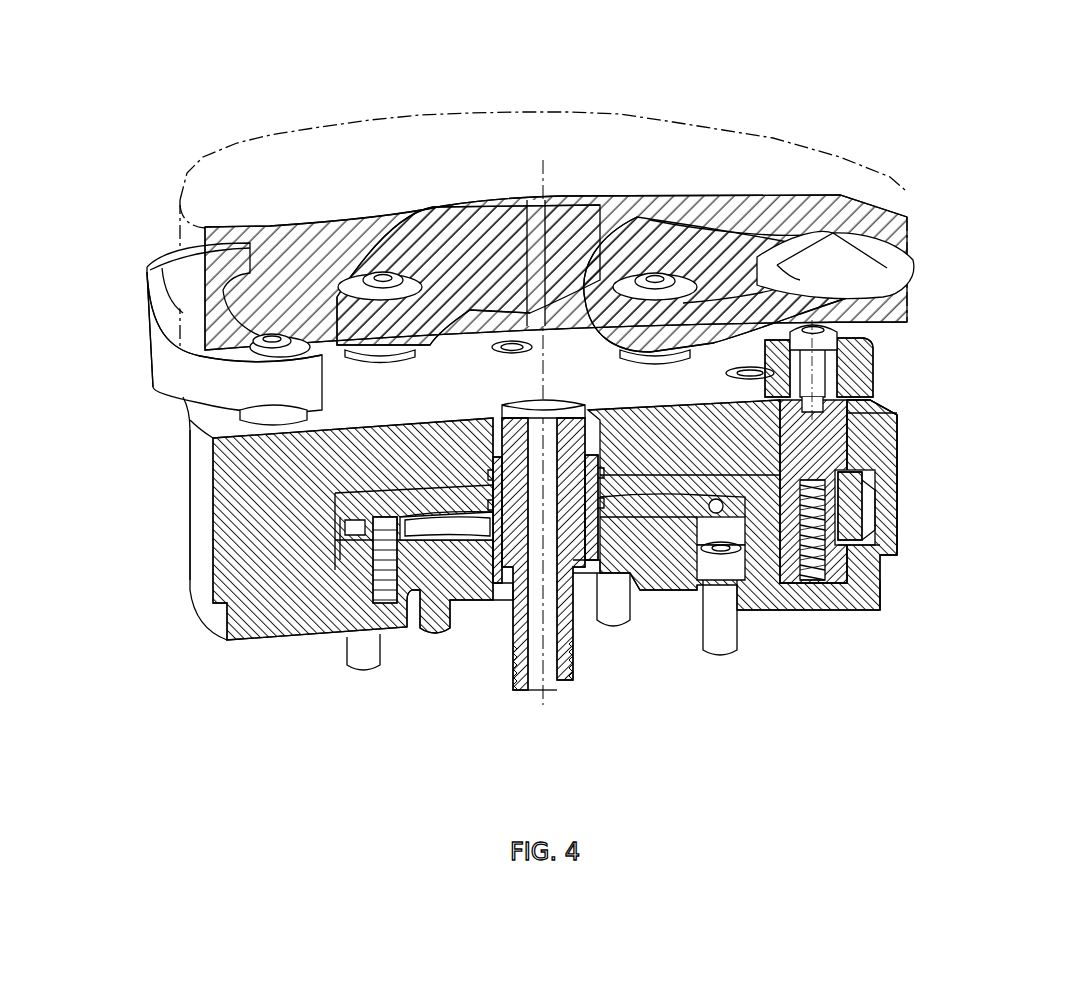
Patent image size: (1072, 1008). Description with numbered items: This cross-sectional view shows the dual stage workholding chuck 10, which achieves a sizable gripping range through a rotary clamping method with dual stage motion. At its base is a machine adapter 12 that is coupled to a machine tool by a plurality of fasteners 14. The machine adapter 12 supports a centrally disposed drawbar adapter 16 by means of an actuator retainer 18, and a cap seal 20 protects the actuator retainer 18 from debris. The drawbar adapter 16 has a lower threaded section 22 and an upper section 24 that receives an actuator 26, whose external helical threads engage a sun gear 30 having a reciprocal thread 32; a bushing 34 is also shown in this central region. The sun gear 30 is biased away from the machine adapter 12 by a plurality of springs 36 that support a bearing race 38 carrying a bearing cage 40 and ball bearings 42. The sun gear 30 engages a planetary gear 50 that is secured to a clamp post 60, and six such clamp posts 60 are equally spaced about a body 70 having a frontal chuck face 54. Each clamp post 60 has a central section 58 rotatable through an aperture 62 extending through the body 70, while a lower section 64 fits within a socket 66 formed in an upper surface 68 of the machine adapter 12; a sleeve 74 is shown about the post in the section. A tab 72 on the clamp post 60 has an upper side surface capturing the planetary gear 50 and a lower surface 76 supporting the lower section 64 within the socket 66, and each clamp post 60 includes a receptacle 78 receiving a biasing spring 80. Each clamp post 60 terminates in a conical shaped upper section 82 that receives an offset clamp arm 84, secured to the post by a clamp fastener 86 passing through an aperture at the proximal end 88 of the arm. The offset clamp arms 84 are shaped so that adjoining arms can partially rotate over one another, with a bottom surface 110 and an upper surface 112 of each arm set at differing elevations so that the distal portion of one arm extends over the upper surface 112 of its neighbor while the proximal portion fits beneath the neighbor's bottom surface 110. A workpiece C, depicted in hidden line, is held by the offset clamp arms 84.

The workholding chuck 10 is at (1005, 118).
The machine adapter 12 is at (217, 617).
The fasteners 14 is at (737, 580).
The drawbar adapter 16 is at (513, 643).
The actuator retainer 18 is at (503, 577).
The cap seal 20 is at (583, 617).
The lower threaded section 22 is at (568, 675).
The upper section 24 is at (502, 438).
The actuator 26 is at (613, 513).
The sun gear 30 is at (340, 517).
The reciprocal thread 32 is at (497, 513).
The bushing 34 is at (598, 470).
The springs 36 is at (385, 605).
The bearing race 38 is at (382, 535).
The bearing cage 40 is at (365, 522).
The ball bearings 42 is at (340, 515).
The planetary gear 50 is at (845, 477).
The frontal chuck face 54 is at (883, 398).
The central section 58 is at (827, 455).
The clamp post 60 is at (840, 390).
The aperture 62 is at (853, 413).
The lower section 64 is at (880, 603).
The socket 66 is at (823, 580).
The upper surface 68 is at (860, 543).
The body 70 is at (188, 449).
The tab 72 is at (858, 533).
The sleeve 74 is at (845, 522).
The lower surface 76 is at (865, 547).
The receptacle 78 is at (823, 577).
The biasing spring 80 is at (812, 580).
The conical shaped upper section 82 is at (837, 372).
The offset clamp arm 84 is at (153, 384).
The clamp fastener 86 is at (270, 339).
The proximal end 88 is at (273, 407).
The bottom surface 110 is at (637, 217).
The upper surface 112 is at (853, 237).
The workpiece C is at (780, 128).